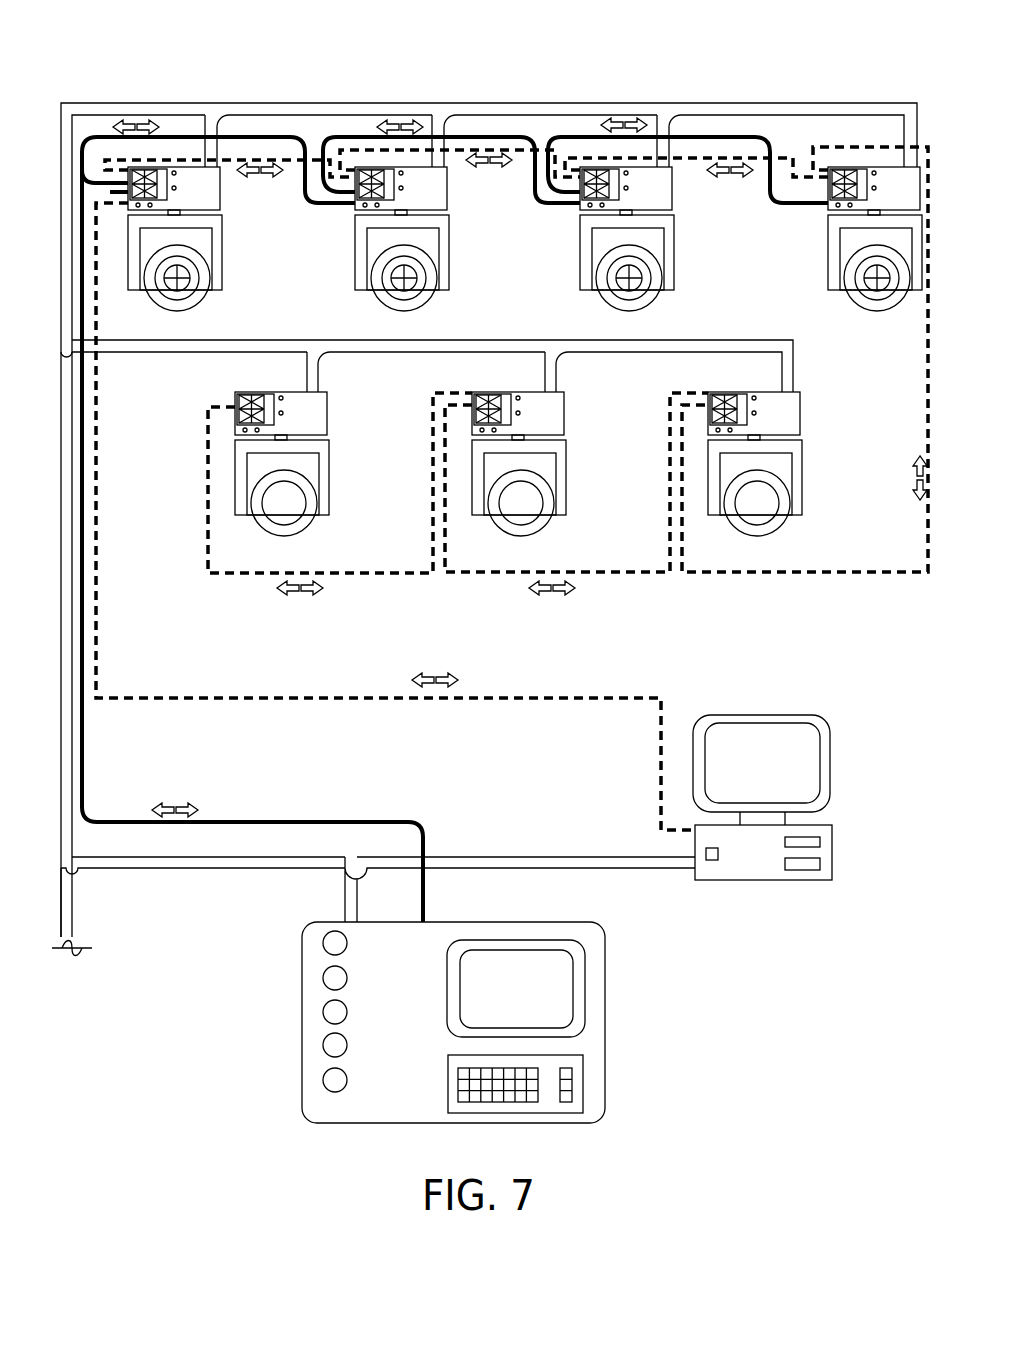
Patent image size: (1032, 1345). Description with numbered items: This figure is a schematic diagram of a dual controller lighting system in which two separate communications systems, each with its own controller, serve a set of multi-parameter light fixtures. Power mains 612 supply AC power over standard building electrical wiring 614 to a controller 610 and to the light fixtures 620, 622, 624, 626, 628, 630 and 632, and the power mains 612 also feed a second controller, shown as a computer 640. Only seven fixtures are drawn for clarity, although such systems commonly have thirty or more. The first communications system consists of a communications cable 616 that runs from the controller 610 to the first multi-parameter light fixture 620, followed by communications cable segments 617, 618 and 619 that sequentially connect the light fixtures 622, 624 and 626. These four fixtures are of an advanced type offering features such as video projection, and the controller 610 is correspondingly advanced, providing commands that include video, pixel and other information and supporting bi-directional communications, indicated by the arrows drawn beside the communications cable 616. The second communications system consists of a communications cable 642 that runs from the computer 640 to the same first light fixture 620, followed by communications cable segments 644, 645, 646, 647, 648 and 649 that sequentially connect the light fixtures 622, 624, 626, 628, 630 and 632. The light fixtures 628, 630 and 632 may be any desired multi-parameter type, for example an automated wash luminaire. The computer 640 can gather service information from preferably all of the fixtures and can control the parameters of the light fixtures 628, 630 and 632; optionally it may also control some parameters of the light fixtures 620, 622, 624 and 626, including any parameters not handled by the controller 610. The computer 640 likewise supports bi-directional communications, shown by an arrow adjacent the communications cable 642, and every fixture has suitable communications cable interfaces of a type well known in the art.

The controller 610 is at (300, 1020).
The power mains 612 is at (82, 923).
The standard building electrical wiring 614 is at (220, 868).
The communications cable 616 is at (340, 820).
The communications cable segment 617 is at (175, 130).
The communications cable segment 618 is at (455, 135).
The communications cable segment 619 is at (728, 135).
The multi-parameter light fixture 620 is at (223, 277).
The multi-parameter light fixture 622 is at (449, 277).
The multi-parameter light fixture 624 is at (674, 277).
The multi-parameter light fixture 626 is at (822, 268).
The multi-parameter light fixture 628 is at (802, 467).
The multi-parameter light fixture 630 is at (568, 482).
The multi-parameter light fixture 632 is at (330, 487).
The computer 640 is at (832, 778).
The communications cable 642 is at (665, 698).
The communications cable segment 644 is at (228, 160).
The communications cable segment 645 is at (505, 157).
The communications cable segment 646 is at (758, 157).
The communications cable segment 647 is at (928, 415).
The communications cable segment 648 is at (567, 573).
The communications cable segment 649 is at (320, 573).